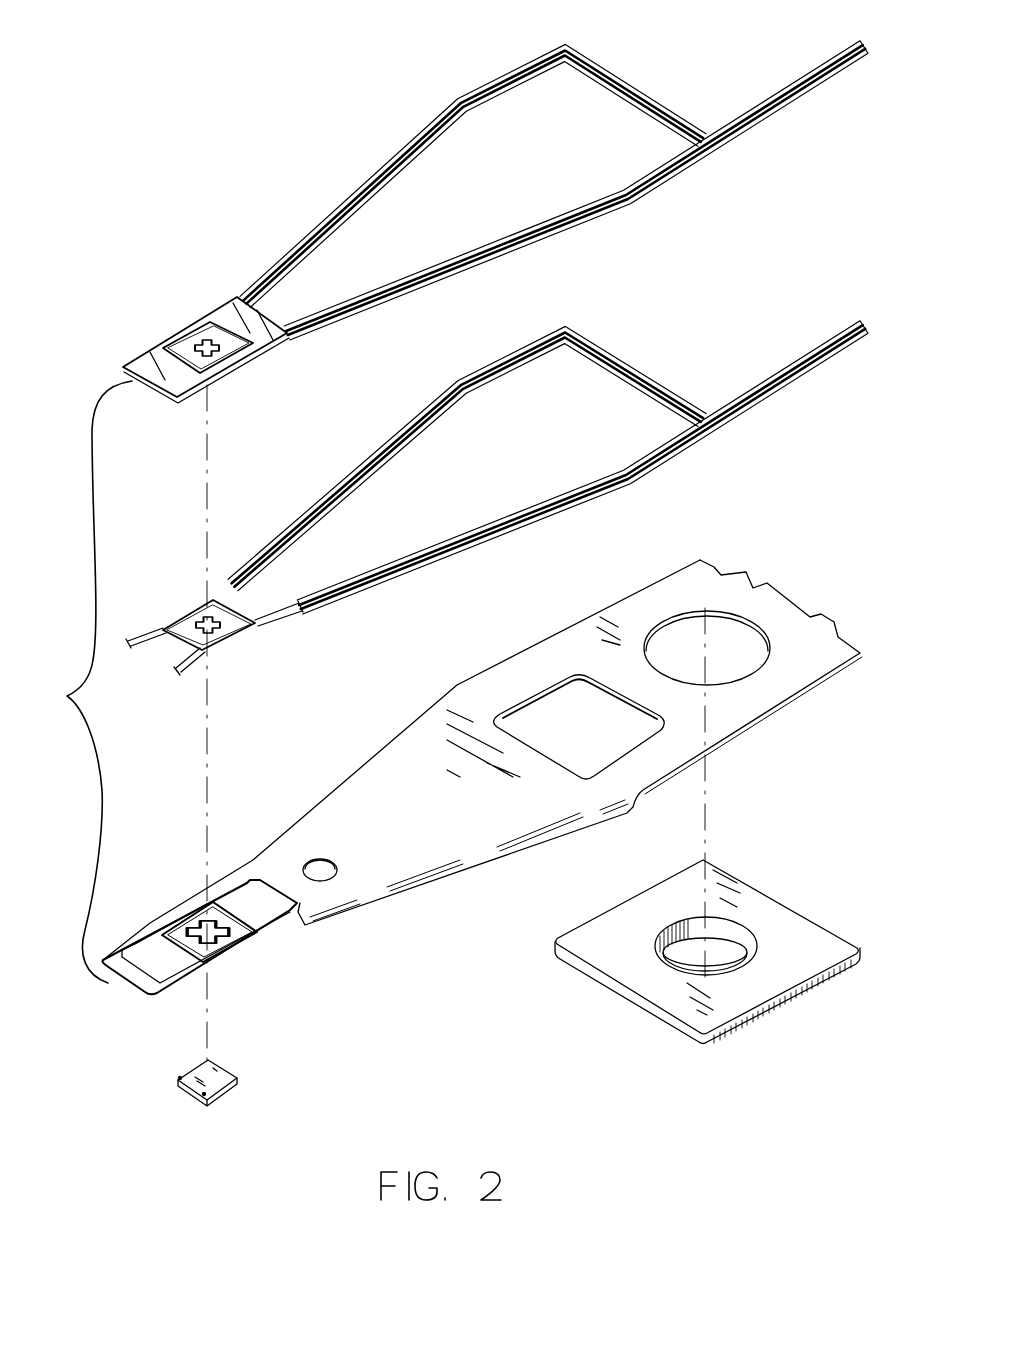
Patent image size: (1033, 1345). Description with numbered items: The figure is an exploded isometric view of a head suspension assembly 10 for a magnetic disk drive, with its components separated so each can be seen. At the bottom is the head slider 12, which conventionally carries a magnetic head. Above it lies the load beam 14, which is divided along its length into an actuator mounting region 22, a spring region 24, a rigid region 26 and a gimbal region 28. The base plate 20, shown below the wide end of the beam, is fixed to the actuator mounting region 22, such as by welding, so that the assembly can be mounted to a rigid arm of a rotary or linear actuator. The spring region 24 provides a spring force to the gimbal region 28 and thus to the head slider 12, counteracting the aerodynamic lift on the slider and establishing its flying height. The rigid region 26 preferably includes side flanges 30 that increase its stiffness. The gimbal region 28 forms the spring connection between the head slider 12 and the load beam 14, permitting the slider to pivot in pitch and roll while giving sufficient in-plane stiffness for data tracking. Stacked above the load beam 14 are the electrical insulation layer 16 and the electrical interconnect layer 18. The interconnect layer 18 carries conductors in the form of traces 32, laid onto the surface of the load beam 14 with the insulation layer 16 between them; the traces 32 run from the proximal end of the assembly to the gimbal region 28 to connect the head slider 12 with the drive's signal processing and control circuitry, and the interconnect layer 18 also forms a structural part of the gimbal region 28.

The head suspension assembly 10 is at (80, 682).
The head slider 12 is at (178, 1085).
The load beam 14 is at (738, 551).
The electrical insulation layer 16 is at (653, 358).
The electrical interconnect layer 18 is at (628, 68).
The base plate 20 is at (760, 905).
The actuator mounting region 22 is at (787, 682).
The spring region 24 is at (550, 670).
The rigid region 26 is at (380, 783).
The gimbal region 28 is at (137, 1007).
The side flanges 30 is at (423, 878).
The traces 32 is at (489, 92).